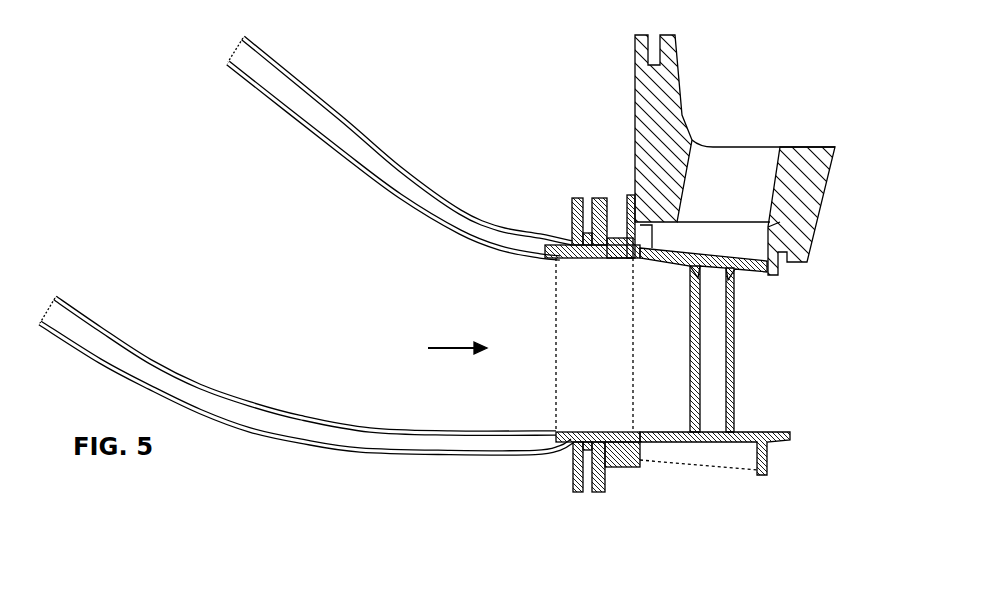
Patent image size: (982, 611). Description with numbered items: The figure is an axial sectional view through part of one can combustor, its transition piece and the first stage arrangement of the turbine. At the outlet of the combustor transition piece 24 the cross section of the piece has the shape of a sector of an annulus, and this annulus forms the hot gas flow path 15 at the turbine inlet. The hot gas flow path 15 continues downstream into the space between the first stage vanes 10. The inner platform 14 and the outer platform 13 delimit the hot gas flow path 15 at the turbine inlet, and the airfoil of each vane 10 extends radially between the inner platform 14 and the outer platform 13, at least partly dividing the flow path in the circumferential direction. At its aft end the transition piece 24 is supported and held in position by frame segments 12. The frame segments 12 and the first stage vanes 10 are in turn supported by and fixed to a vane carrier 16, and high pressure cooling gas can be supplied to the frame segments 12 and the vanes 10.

The first stage vane 10 is at (745, 372).
The frame segment 12 is at (575, 440).
The outer platform 13 is at (665, 253).
The inner platform 14 is at (668, 437).
The hot gas flow path 15 is at (477, 351).
The vane carrier 16 is at (731, 214).
The combustor transition piece 24 is at (372, 427).